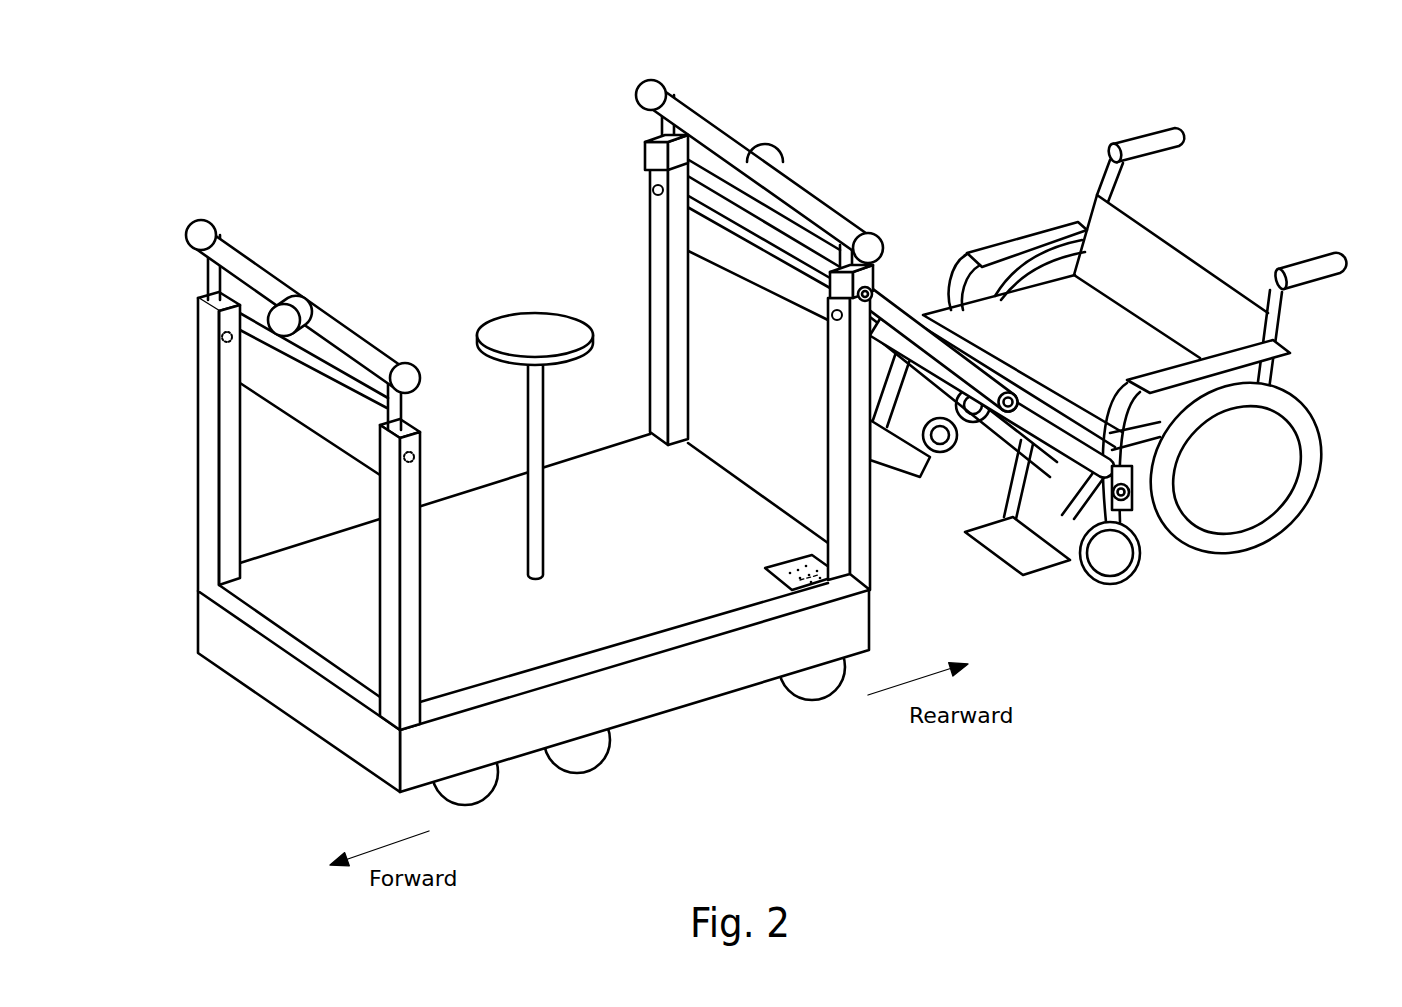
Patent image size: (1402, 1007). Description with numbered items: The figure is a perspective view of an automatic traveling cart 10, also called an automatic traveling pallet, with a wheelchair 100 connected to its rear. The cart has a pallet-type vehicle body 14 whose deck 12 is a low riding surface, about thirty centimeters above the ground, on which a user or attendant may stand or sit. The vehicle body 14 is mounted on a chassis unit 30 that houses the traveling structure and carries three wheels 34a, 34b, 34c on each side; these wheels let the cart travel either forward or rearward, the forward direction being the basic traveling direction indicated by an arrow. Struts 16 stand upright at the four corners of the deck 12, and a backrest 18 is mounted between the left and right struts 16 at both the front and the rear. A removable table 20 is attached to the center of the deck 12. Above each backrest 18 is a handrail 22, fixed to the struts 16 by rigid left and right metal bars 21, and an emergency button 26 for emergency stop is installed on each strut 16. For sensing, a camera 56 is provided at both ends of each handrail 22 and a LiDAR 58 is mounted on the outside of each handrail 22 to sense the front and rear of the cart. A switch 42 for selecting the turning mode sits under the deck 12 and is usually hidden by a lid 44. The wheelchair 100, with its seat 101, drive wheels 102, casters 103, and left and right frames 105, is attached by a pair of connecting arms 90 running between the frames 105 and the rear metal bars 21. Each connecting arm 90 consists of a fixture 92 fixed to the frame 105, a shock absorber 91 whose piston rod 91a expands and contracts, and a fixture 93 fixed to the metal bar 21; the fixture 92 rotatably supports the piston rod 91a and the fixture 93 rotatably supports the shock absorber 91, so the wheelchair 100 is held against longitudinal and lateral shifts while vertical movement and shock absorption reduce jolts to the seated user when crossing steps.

The automatic traveling cart 10 is at (569, 426).
The deck 12 is at (622, 624).
The vehicle body 14 is at (845, 588).
The strut 16 is at (200, 500).
The backrest 18 is at (257, 392).
The removable table 20 is at (510, 312).
The metal bar 21 is at (206, 271).
The handrail 22 is at (286, 283).
The emergency button 26 is at (226, 345).
The chassis unit 30 is at (470, 369).
The wheel 34a is at (470, 800).
The wheel 34b is at (578, 768).
The wheel 34c is at (812, 698).
The switch 42 is at (812, 583).
The lid 44 is at (790, 555).
The camera 56 is at (187, 232).
The LiDAR 58 is at (305, 298).
The connecting arm 90 is at (917, 372).
The shock absorber 91 is at (893, 344).
The piston rod 91a is at (783, 228).
The fixture 92 is at (917, 380).
The fixture 93 is at (645, 147).
The wheelchair 100 is at (1137, 377).
The seat 101 is at (1123, 337).
The drive wheel 102 is at (1265, 500).
The caster 103 is at (1107, 560).
The frame 105 is at (946, 276).